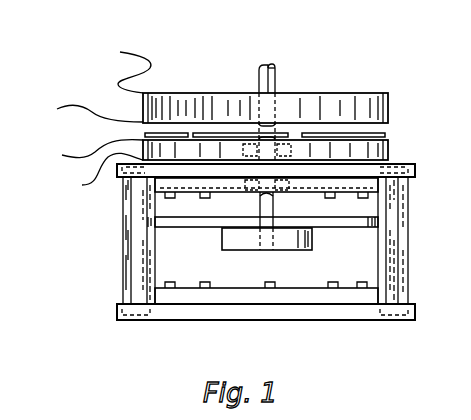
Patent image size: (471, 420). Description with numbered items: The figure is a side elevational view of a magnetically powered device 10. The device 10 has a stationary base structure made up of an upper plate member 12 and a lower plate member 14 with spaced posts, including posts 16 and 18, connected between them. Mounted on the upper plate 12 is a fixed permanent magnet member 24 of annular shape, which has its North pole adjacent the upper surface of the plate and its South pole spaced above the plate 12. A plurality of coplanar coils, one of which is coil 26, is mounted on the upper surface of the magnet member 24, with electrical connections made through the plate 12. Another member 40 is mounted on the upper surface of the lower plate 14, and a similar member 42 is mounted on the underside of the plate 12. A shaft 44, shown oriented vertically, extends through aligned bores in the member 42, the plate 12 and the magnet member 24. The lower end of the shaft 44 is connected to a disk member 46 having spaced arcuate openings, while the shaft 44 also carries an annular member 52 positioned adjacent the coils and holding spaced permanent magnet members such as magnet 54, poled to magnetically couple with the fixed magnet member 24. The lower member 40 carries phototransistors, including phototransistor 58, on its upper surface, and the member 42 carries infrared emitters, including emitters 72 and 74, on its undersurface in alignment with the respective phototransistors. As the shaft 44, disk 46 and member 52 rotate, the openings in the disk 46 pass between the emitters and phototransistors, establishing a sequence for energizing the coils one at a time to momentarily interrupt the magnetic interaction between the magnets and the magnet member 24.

The device 10 is at (387, 58).
The upper plate member 12 is at (412, 172).
The lower plate member 14 is at (413, 312).
The post 16 is at (398, 250).
The post 18 is at (136, 257).
The fixed permanent magnet member 24 is at (370, 150).
The coil 26 is at (283, 118).
The lower plate member 40 is at (197, 294).
The member 42 is at (313, 185).
The shaft 44 is at (262, 70).
The disk member 46 is at (205, 228).
The annular member 52 is at (368, 108).
The permanent magnet member 54 is at (252, 107).
The phototransistor 58 is at (270, 290).
The infrared emitter 72 is at (265, 250).
The infrared emitter 74 is at (203, 196).